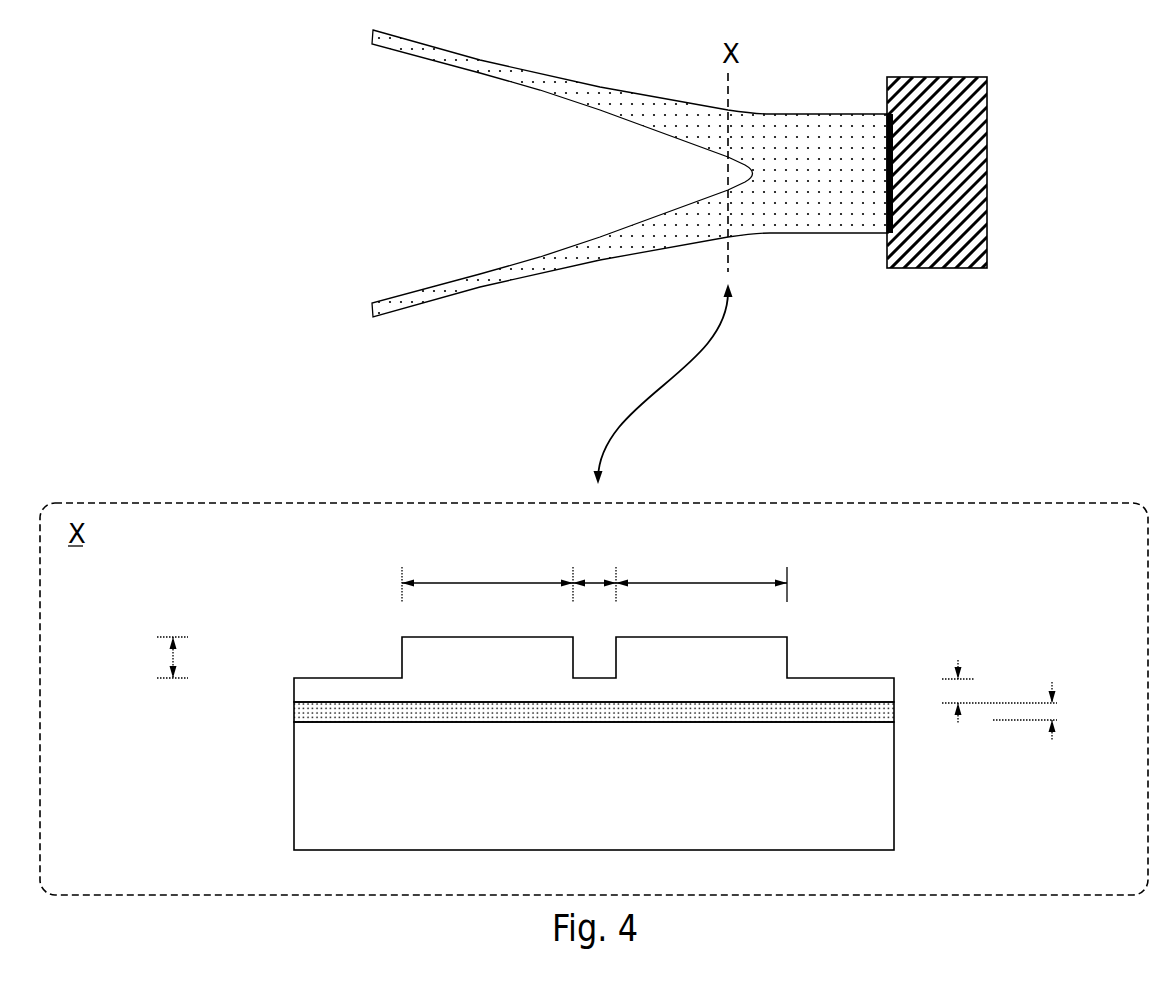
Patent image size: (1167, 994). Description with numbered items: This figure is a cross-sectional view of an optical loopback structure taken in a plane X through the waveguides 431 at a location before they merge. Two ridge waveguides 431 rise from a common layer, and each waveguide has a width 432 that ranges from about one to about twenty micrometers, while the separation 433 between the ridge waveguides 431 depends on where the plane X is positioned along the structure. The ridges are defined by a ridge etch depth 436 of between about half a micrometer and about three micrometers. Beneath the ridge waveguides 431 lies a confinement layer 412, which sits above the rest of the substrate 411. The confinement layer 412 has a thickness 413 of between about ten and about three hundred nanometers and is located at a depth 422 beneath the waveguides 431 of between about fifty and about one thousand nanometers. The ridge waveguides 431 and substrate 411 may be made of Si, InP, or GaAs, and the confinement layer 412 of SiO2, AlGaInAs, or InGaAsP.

The substrate 411 is at (294, 782).
The confinement layer 412 is at (294, 711).
The thickness of the confinement layer 413 is at (1029, 727).
The depth of the confinement layer beneath the waveguides 422 is at (999, 678).
The ridge waveguides 431 is at (401, 659).
The width of the waveguide 432 is at (594, 576).
The separation between the ridge waveguides 433 is at (594, 576).
The ridge etch depth 436 is at (160, 657).